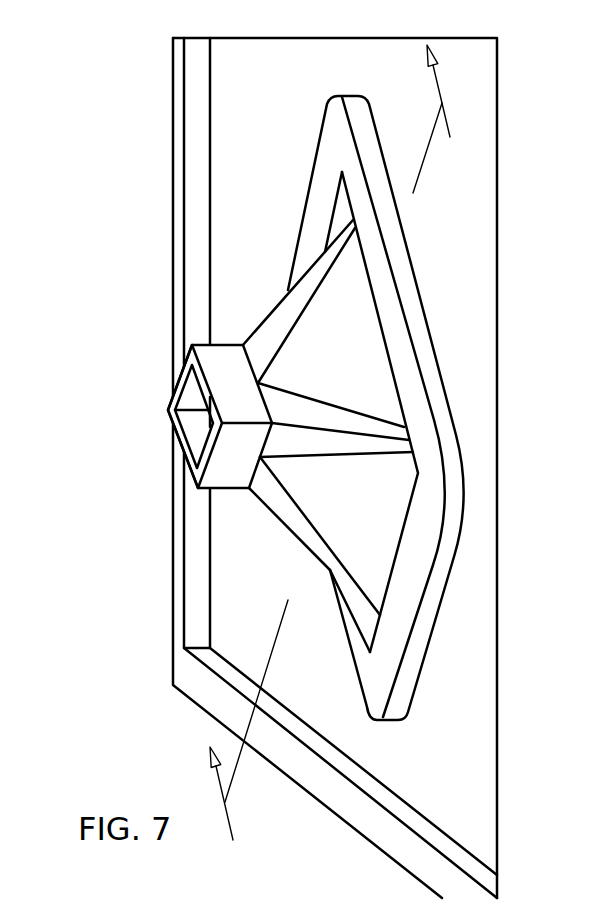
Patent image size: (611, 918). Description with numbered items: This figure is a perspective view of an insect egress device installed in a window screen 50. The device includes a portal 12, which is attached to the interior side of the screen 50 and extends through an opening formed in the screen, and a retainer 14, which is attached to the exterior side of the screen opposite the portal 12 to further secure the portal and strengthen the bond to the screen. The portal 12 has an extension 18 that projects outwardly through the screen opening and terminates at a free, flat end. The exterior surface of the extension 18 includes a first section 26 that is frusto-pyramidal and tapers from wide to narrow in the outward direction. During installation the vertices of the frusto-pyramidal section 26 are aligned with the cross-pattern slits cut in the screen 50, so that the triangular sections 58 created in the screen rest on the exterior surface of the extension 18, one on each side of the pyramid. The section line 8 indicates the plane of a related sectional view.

The section line 8- 8 is at (324, 442).
The portal 12 is at (278, 507).
The retainer 14 is at (388, 258).
The extension 18 is at (257, 492).
The first section 26 is at (263, 338).
The window screen 50 is at (485, 391).
The triangular sections 58 is at (352, 343).